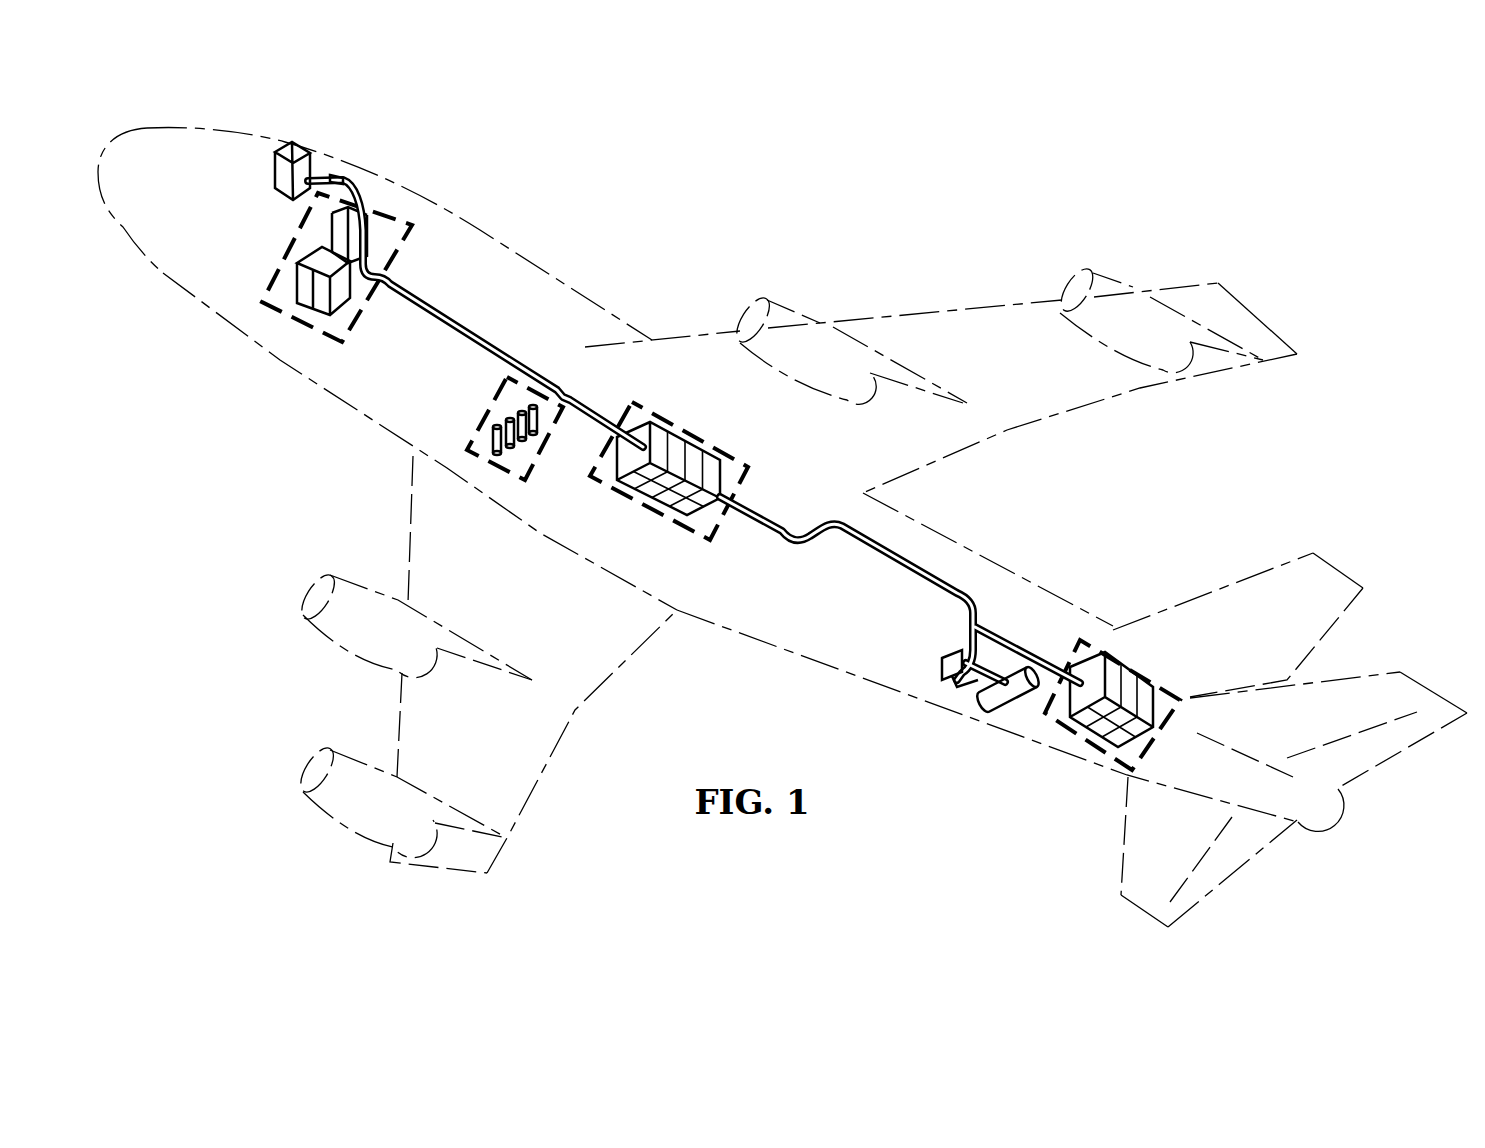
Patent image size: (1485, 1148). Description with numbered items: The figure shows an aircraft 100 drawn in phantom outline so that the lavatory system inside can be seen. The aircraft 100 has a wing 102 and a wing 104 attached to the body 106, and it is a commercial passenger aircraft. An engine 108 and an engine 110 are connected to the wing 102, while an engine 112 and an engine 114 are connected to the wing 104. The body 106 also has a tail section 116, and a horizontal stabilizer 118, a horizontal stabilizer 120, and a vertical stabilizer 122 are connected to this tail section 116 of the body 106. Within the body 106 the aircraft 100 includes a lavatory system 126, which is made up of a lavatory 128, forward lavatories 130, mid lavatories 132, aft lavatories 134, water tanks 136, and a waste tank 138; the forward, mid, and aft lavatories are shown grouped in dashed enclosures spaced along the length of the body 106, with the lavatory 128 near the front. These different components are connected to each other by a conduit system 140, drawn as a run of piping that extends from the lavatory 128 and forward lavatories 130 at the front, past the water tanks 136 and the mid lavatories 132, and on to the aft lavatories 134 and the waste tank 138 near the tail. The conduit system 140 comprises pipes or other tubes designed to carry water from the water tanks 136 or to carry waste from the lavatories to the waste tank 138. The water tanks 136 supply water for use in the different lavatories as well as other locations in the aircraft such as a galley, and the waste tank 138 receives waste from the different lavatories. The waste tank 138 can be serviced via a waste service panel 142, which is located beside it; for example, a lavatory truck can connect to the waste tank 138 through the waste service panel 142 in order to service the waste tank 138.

The aircraft 100 is at (553, 148).
The wing 102 is at (413, 490).
The wing 104 is at (942, 313).
The body 106 is at (168, 270).
The engine 108 is at (335, 820).
The engine 110 is at (350, 653).
The engine 112 is at (778, 310).
The engine 114 is at (1097, 278).
The tail section 116 is at (1291, 720).
The horizontal stabilizer 118 is at (1270, 843).
The horizontal stabilizer 120 is at (1437, 695).
The vertical stabilizer 122 is at (1340, 573).
The lavatory system 126 is at (1072, 775).
The lavatory 128 is at (303, 167).
The forward lavatories 130 is at (276, 271).
The mid lavatories 132 is at (691, 432).
The aft lavatories 134 is at (1161, 674).
The water tanks 136 is at (478, 421).
The waste tank 138 is at (1005, 712).
The conduit system 140 is at (417, 312).
The waste service panel 142 is at (950, 657).